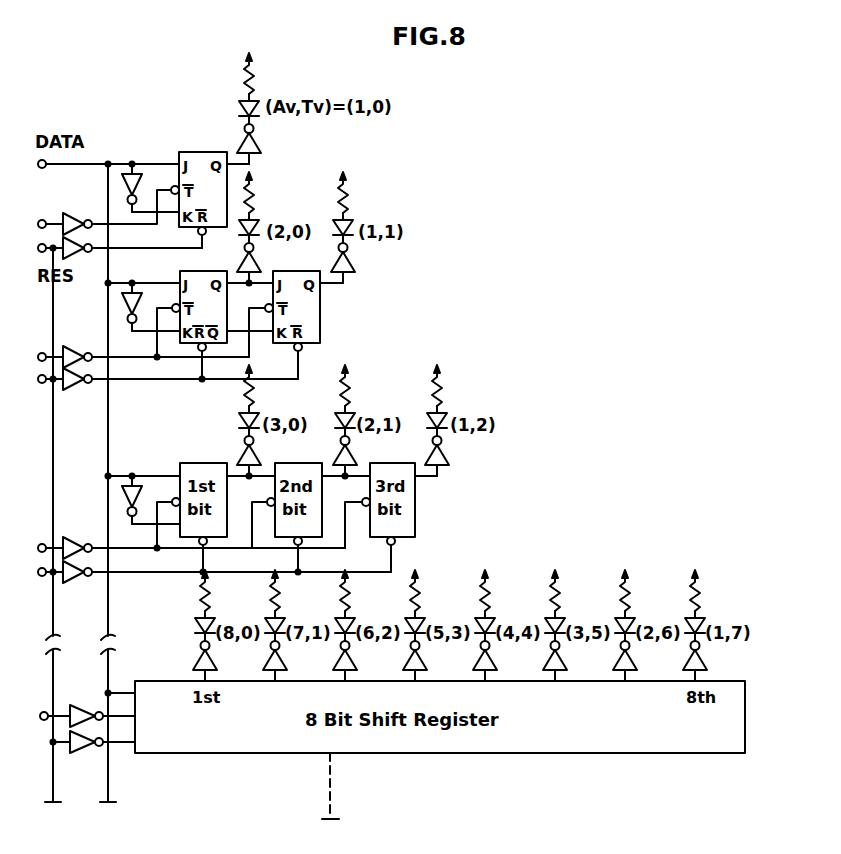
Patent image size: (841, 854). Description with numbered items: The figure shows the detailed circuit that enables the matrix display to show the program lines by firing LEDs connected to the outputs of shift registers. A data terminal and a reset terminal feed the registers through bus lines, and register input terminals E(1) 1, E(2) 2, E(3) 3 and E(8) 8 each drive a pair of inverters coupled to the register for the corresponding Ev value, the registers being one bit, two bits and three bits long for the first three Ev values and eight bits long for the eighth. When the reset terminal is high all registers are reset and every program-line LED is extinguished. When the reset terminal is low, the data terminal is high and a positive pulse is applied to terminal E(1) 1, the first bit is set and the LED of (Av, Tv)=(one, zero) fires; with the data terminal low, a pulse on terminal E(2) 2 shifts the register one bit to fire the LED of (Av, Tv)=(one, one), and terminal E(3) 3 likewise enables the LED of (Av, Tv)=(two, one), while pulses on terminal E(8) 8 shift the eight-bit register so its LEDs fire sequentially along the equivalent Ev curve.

The register input terminal E 1 is at (65, 226).
The register input terminal E 2 is at (65, 354).
The register input terminal E 3 is at (64, 545).
The register input terminal E 8 is at (70, 715).